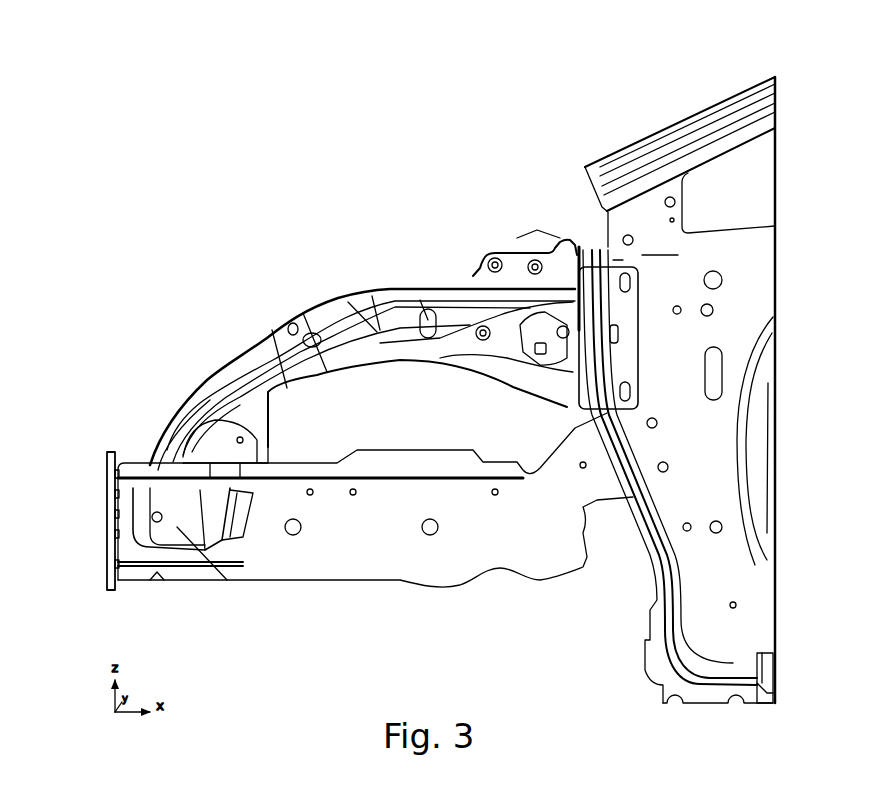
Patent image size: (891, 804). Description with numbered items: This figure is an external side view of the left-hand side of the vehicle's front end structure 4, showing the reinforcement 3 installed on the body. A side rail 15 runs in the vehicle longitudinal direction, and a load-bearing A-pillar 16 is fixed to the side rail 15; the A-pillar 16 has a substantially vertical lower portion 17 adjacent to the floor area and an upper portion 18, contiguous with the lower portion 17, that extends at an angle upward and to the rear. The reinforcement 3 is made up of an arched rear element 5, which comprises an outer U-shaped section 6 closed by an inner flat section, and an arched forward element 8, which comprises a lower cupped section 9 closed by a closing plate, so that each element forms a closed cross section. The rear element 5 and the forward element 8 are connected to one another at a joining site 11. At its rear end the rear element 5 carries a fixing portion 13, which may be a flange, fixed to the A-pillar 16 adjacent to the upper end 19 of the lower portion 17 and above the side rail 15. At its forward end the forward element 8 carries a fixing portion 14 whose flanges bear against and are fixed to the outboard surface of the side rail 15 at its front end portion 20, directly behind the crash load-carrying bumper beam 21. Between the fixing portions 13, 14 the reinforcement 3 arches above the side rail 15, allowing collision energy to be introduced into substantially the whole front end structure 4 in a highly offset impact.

The reinforcement 3 is at (215, 295).
The front end structure 4 is at (205, 205).
The arched rear element 5 is at (357, 283).
The outer U-shaped section 6 is at (400, 292).
The arched forward element 8 is at (170, 400).
The lower cupped section 9 is at (178, 500).
The joining site 11 is at (232, 362).
The fixing portion 13 is at (615, 320).
The fixing portion 14 is at (240, 533).
The side rail 15 is at (373, 552).
The A-pillar 16 is at (707, 427).
The lower portion 17 is at (657, 593).
The upper portion 18 is at (705, 160).
The upper end 19 is at (685, 266).
The front end portion 20 is at (115, 605).
The bumper beam 21 is at (105, 525).